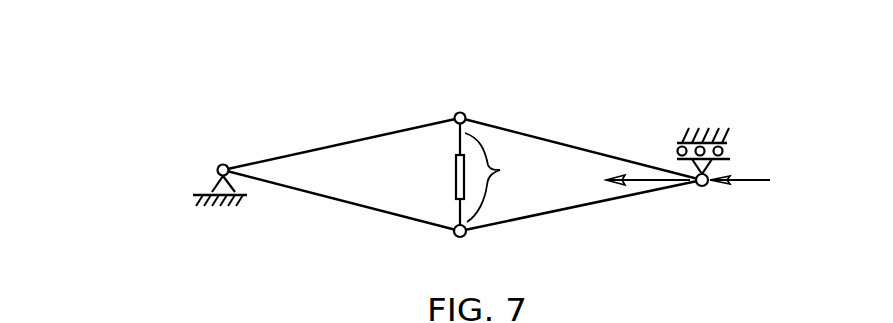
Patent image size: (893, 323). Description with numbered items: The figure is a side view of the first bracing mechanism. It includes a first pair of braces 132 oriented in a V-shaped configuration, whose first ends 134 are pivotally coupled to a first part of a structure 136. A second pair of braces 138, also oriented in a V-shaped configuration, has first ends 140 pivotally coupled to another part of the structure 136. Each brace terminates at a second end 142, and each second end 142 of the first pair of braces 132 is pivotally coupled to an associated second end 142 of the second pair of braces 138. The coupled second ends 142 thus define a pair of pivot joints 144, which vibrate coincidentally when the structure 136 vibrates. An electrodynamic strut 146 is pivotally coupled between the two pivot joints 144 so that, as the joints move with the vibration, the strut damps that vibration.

The first pair of braces 132 is at (348, 140).
The first ends of the first pair of braces 134 is at (226, 162).
The structure 136 is at (232, 185).
The second pair of braces 138 is at (537, 138).
The first ends of the second pair of braces 140 is at (700, 190).
The second ends of the braces 142 is at (459, 112).
The pivot joints 144 is at (511, 174).
The electrodynamic strut 146 is at (455, 173).